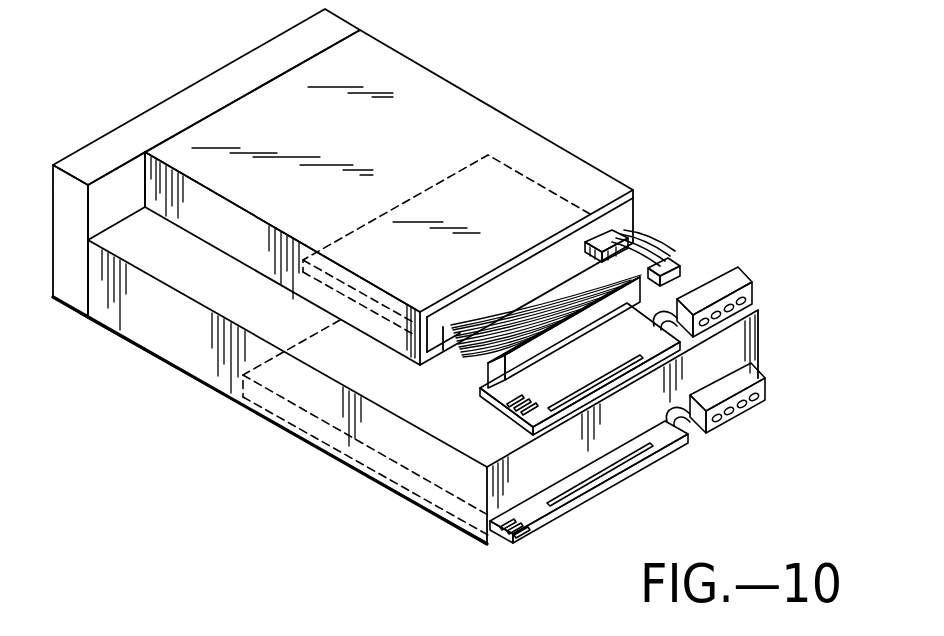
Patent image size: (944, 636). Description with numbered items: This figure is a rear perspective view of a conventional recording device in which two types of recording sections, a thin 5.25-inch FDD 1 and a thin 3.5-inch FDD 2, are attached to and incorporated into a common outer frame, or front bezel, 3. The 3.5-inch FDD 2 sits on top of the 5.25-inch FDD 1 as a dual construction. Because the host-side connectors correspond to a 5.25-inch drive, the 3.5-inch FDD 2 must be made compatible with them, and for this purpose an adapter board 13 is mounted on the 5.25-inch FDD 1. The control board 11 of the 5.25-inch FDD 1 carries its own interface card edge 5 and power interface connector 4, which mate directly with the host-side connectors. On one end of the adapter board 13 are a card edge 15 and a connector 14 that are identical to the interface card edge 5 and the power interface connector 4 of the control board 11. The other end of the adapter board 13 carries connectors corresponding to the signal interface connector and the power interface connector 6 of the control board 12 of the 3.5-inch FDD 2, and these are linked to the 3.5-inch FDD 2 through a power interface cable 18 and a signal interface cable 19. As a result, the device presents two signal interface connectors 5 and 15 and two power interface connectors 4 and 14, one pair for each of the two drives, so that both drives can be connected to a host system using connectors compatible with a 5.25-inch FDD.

The 5.25-inch FDD 1 is at (187, 363).
The 3.5-inch FDD 2 is at (412, 95).
The outer frame (front bezel) 3 is at (200, 95).
The power interface connector 4 is at (747, 373).
The interface card edge 5 is at (535, 522).
The power interface connector 6 is at (638, 215).
The control board 11 is at (323, 410).
The control board 12 is at (497, 193).
The adapter board 13 is at (510, 390).
The connector 14 is at (732, 273).
The card edge 15 is at (610, 370).
The power interface cable 18 is at (643, 257).
The signal interface cable 19 is at (493, 350).